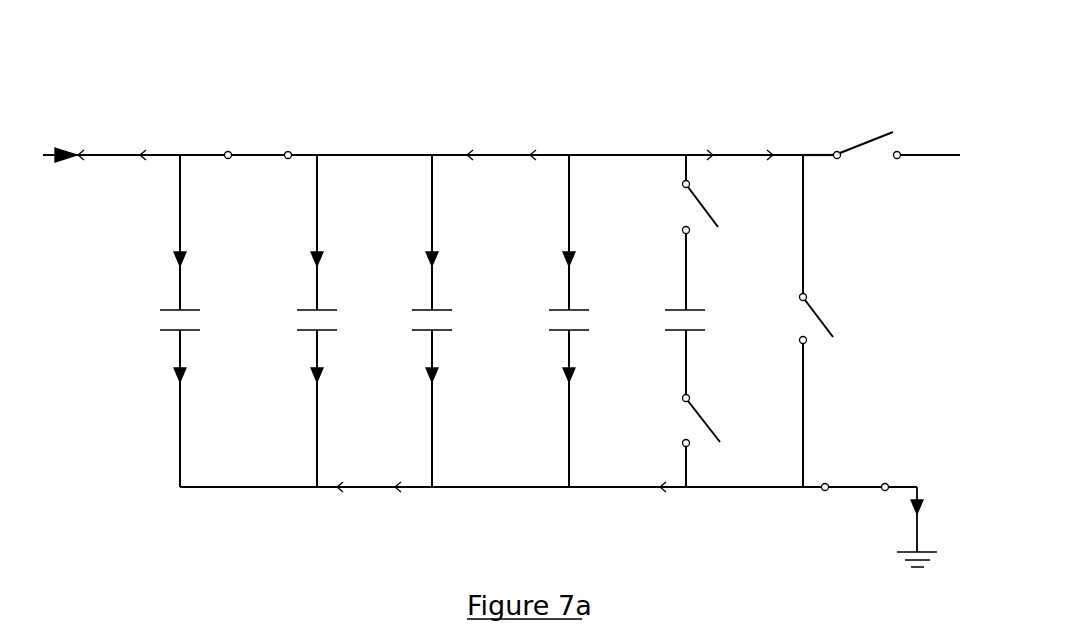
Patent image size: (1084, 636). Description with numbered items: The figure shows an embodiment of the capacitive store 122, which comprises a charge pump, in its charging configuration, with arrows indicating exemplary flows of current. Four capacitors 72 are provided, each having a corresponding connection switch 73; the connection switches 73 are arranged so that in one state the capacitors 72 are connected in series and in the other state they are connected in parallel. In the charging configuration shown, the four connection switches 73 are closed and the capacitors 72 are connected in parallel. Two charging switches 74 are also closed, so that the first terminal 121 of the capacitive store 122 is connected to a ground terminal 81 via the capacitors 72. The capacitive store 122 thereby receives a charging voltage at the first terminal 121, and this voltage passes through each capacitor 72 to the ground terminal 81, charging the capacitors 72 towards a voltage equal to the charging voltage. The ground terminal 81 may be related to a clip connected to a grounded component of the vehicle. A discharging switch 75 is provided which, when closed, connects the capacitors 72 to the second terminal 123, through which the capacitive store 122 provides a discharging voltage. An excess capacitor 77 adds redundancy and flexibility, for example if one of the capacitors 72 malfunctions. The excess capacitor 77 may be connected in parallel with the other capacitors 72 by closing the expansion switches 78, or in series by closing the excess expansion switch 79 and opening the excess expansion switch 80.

The capacitor 72 is at (290, 310).
The connection switch 73 is at (270, 153).
The charging switch 74 is at (113, 153).
The discharging switch 75 is at (858, 150).
The excess capacitor 77 is at (665, 310).
The expansion switch 78 is at (700, 212).
The excess expansion switch 79 is at (815, 325).
The excess expansion switch 80 is at (748, 153).
The ground terminal 81 is at (897, 548).
The first terminal 121 is at (48, 150).
The capacitive store 122 is at (835, 78).
The second terminal 123 is at (950, 150).